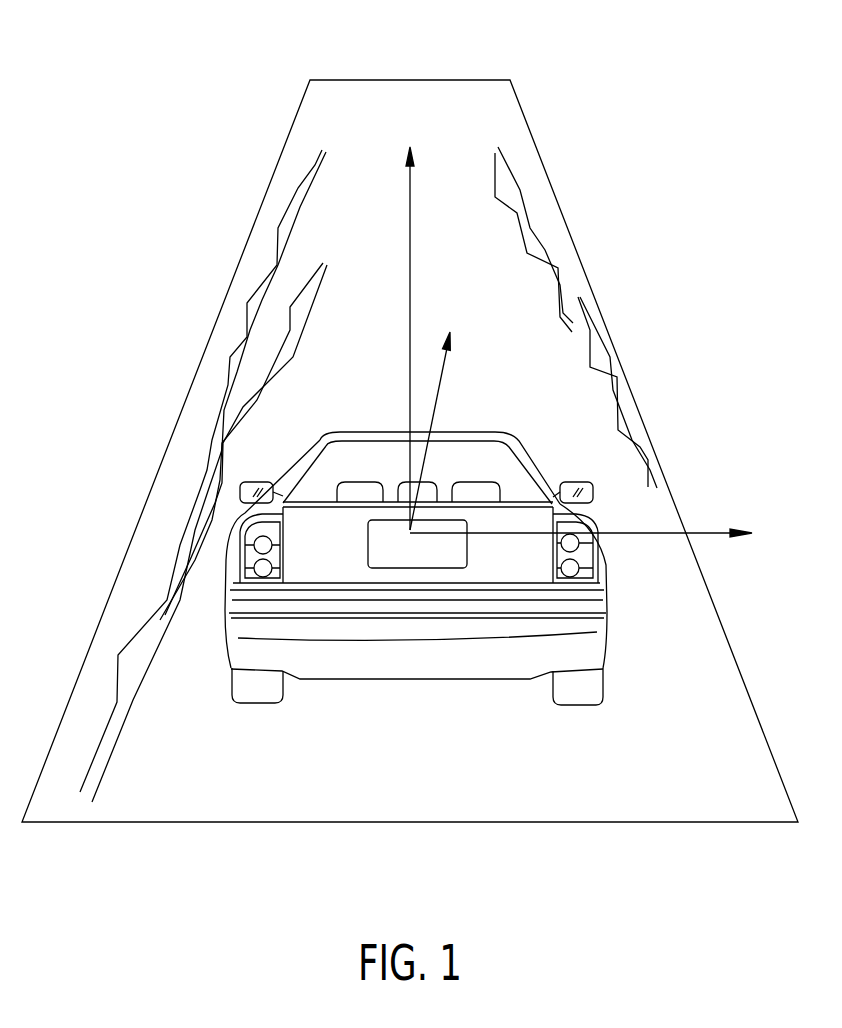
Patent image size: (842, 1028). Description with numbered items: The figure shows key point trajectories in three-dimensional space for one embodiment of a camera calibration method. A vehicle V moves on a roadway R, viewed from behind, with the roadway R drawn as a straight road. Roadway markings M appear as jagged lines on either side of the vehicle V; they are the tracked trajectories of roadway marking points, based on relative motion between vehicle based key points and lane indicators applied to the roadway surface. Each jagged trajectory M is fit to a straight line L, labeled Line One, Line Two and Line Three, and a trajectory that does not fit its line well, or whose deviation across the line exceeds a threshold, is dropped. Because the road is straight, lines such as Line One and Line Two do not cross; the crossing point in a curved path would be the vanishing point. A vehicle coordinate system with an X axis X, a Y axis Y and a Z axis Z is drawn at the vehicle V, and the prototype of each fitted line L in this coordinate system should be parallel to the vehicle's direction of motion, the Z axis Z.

The roadway R is at (482, 120).
The roadway markings M is at (298, 190).
The lines L is at (518, 197).
The vehicle V is at (587, 657).
The X axis X is at (581, 554).
The Y axis Y is at (443, 431).
The Z axis Z is at (421, 338).